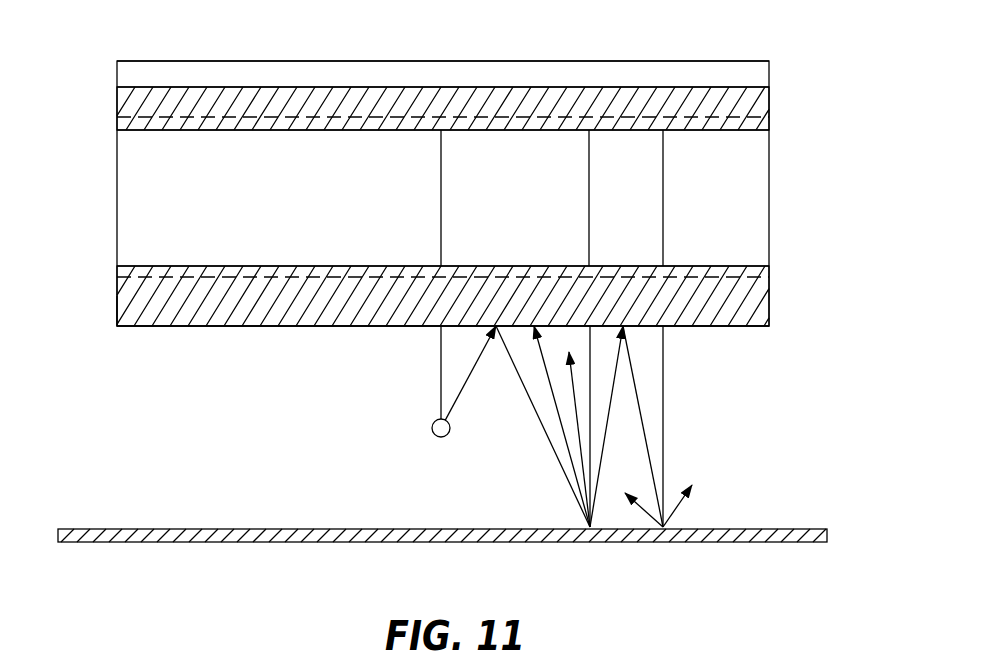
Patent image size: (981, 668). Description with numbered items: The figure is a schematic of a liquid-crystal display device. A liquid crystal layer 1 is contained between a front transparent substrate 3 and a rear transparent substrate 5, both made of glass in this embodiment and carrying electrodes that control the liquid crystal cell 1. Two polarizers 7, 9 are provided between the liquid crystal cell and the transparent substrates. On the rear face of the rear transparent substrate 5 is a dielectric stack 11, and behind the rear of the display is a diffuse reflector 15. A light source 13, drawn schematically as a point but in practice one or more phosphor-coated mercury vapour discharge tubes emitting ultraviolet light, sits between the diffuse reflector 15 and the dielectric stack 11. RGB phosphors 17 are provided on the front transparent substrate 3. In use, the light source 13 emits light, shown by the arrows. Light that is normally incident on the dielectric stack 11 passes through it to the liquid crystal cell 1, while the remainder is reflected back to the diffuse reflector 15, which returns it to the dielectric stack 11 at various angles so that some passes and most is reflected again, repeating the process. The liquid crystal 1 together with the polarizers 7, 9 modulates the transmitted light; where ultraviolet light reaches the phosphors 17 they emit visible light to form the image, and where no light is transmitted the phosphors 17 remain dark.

The liquid crystal layer 1 is at (100, 202).
The front transparent substrate 3 is at (780, 105).
The rear transparent substrate 5 is at (780, 295).
The polarizer 7 is at (780, 130).
The polarizer 9 is at (780, 268).
The dielectric stack 11 is at (100, 315).
The light source 13 is at (432, 430).
The diffuse reflector 15 is at (742, 545).
The RGB phosphors 17 is at (545, 70).